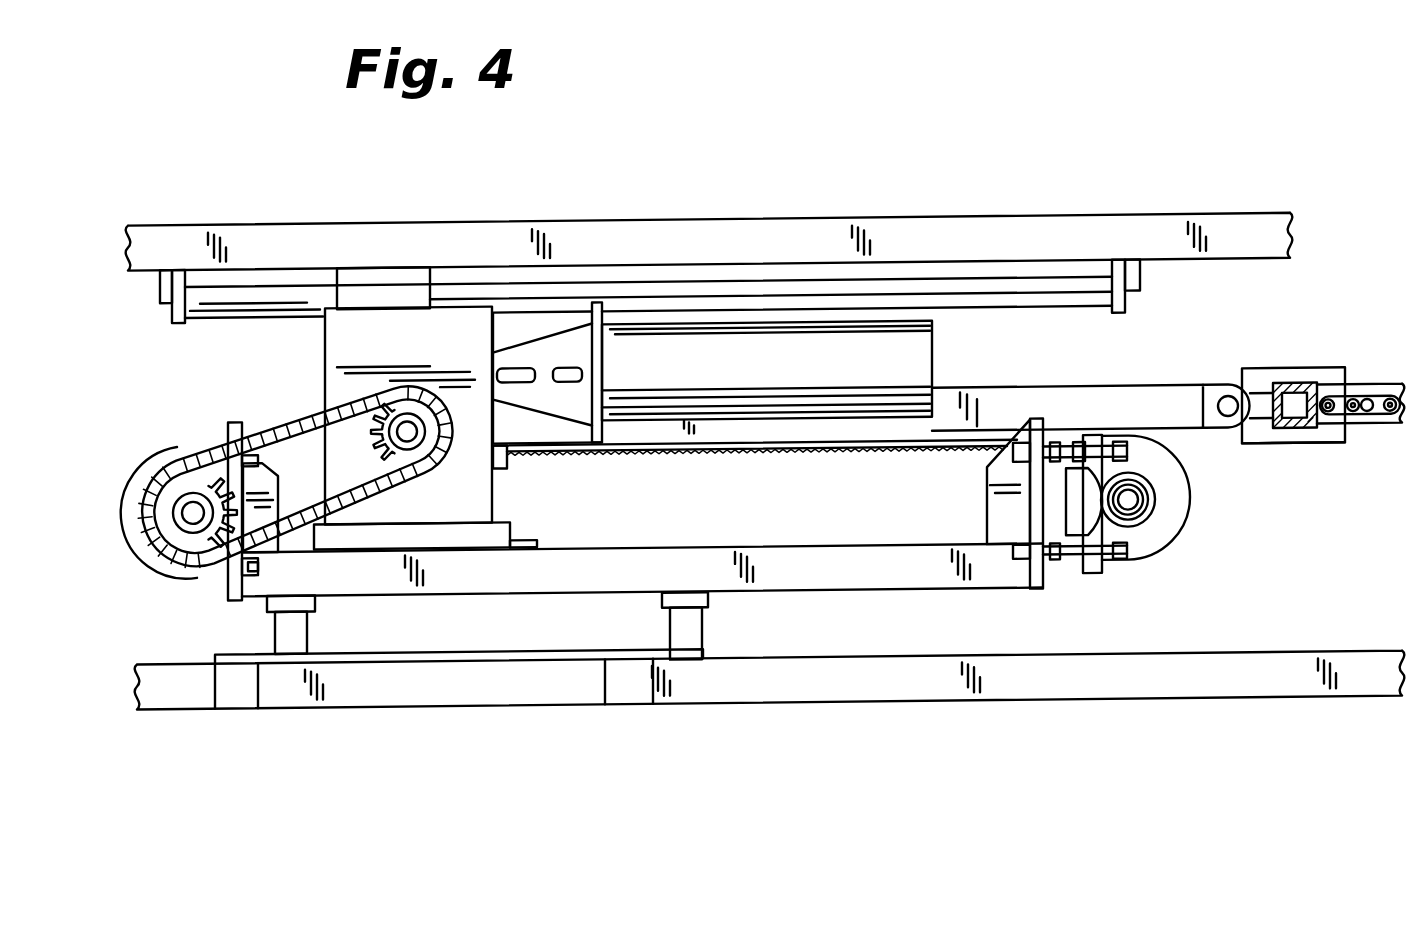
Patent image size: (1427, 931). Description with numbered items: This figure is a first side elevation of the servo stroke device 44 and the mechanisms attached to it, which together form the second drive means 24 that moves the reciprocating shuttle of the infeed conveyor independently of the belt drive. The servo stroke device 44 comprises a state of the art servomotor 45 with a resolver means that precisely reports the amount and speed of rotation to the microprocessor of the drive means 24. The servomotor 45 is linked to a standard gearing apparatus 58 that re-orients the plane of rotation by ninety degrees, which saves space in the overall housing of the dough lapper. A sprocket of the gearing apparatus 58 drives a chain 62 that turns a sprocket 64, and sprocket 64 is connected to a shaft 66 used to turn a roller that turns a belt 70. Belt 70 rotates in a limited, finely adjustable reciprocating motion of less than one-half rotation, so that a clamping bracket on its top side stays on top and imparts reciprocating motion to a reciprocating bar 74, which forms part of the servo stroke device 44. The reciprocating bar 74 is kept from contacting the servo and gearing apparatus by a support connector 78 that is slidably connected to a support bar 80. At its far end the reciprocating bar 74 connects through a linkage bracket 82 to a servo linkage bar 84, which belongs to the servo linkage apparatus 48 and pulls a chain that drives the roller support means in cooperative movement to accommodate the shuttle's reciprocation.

The second drive means 24 is at (348, 729).
The servo stroke device 44 is at (943, 368).
The servomotor 45 is at (773, 396).
The servo linkage apparatus 48 is at (1338, 465).
The gearing apparatus 58 is at (412, 362).
The chain 62 is at (307, 428).
The sprocket 64 is at (192, 545).
The shaft 66 is at (192, 510).
The belt 70 is at (767, 463).
The reciprocating bar 74 is at (1120, 410).
The support connector 78 is at (380, 291).
The support bar 80 is at (890, 300).
The linkage bracket 82 is at (1300, 389).
The servo linkage bar 84 is at (1383, 437).